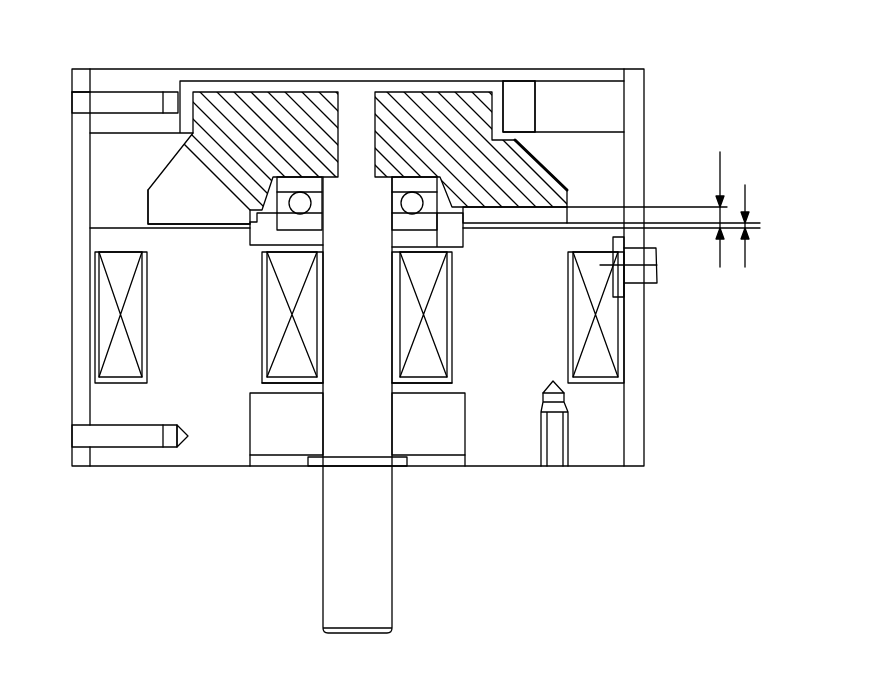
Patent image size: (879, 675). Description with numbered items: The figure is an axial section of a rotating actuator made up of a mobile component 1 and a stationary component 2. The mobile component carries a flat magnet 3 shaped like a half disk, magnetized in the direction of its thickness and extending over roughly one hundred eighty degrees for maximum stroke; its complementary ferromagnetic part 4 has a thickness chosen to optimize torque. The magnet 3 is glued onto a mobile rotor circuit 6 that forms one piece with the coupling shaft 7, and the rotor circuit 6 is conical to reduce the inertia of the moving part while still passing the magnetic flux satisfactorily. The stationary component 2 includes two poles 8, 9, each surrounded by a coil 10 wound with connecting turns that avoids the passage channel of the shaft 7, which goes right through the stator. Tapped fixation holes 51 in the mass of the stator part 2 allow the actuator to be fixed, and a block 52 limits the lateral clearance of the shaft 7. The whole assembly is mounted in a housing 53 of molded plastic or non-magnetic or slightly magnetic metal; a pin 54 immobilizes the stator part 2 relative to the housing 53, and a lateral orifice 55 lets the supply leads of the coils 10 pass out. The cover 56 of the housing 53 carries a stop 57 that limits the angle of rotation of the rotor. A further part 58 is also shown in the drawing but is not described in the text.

The mobile component 1 is at (604, 154).
The stationary component 2 is at (197, 510).
The flat magnet 3 is at (517, 216).
The ferromagnetic part 4 is at (158, 210).
The mobile rotor circuit 6 is at (433, 98).
The coupling shaft 7 is at (340, 587).
The pole 8 is at (196, 328).
The pole 9 is at (496, 327).
The coil 10 is at (110, 297).
The tapped fixation hole 51 is at (551, 453).
The block 52 is at (275, 444).
The housing 53 is at (72, 350).
The pin 54 is at (125, 444).
The lateral orifice 55 is at (652, 275).
The cover 56 is at (123, 95).
The stop 57 is at (525, 88).
The bottom plate 58 is at (398, 463).